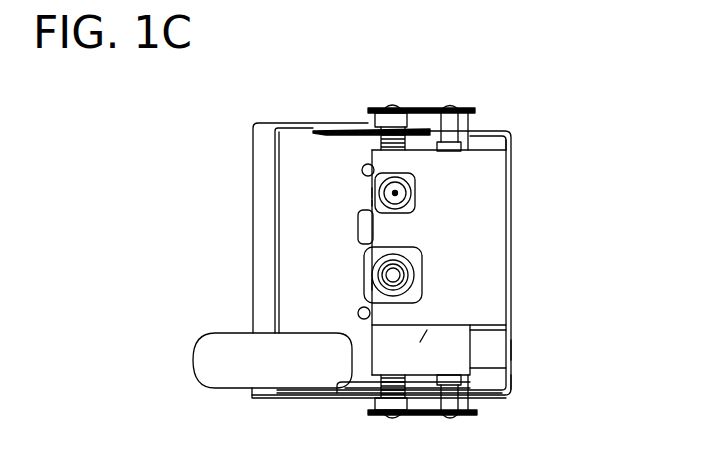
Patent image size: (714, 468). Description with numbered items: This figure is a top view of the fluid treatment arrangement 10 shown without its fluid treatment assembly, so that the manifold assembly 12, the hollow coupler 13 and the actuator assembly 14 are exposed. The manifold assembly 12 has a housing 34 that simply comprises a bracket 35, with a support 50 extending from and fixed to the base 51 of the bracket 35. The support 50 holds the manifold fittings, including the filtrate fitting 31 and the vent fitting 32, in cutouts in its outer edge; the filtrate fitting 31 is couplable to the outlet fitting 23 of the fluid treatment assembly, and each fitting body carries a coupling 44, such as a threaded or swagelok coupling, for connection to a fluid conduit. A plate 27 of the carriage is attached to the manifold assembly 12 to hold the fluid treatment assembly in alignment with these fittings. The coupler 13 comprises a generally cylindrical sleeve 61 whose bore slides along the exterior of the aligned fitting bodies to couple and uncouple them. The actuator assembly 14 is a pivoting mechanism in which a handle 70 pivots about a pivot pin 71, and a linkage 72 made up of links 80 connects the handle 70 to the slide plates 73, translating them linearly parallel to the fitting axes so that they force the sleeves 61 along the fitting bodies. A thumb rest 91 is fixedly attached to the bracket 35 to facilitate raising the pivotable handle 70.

The fluid treatment arrangement 10 is at (238, 110).
The manifold assembly 12 is at (509, 130).
The hollow coupler 13 is at (376, 190).
The actuator assembly 14 is at (310, 400).
The outlet fitting 23 is at (358, 228).
The plate 27 is at (364, 166).
The filtrate fitting 31 is at (366, 262).
The vent fitting 32 is at (415, 178).
The housing 34 is at (512, 142).
The bracket 35 is at (513, 350).
The coupling 44 is at (416, 198).
The support 50 is at (487, 232).
The base 51 is at (513, 384).
The sleeve 61 is at (376, 198).
The handle 70 is at (254, 242).
The pivot pin 71 is at (393, 106).
The linkage 72 is at (346, 127).
The slide plate 73 is at (472, 313).
The link 80 is at (428, 128).
The thumb rest 91 is at (198, 360).